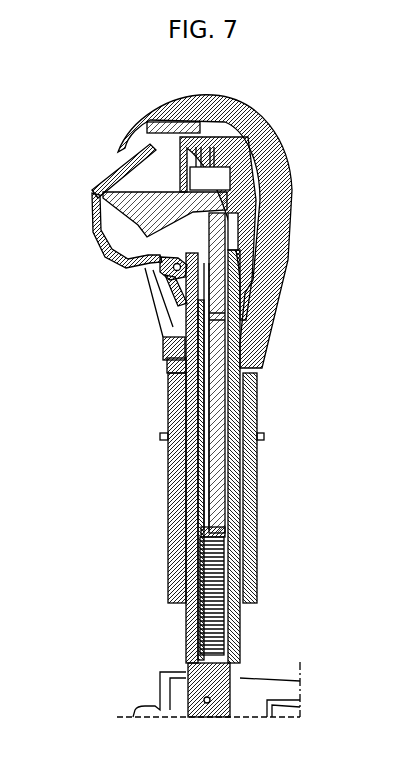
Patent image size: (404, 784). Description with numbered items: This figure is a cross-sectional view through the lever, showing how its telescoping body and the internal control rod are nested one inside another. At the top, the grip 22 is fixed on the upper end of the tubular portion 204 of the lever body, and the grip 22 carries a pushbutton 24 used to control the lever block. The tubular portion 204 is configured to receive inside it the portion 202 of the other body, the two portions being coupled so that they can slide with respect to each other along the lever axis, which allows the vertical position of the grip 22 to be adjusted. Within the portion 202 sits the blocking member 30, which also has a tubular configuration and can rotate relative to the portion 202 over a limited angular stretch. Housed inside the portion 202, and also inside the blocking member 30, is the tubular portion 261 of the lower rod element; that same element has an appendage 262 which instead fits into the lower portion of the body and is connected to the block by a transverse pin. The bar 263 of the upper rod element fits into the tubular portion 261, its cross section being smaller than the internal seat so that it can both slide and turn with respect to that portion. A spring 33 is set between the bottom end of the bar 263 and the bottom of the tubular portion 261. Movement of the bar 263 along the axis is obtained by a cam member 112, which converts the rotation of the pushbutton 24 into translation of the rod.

The grip 22 is at (280, 292).
The cam member 112 is at (108, 170).
The pushbutton 24 is at (117, 253).
The tubular portion 204 is at (172, 474).
The portion 202 is at (243, 505).
The bar 263 is at (213, 393).
The blocking member 30 is at (197, 563).
The tubular portion 261 is at (222, 548).
The spring 33 is at (200, 630).
The appendage 262 is at (210, 680).